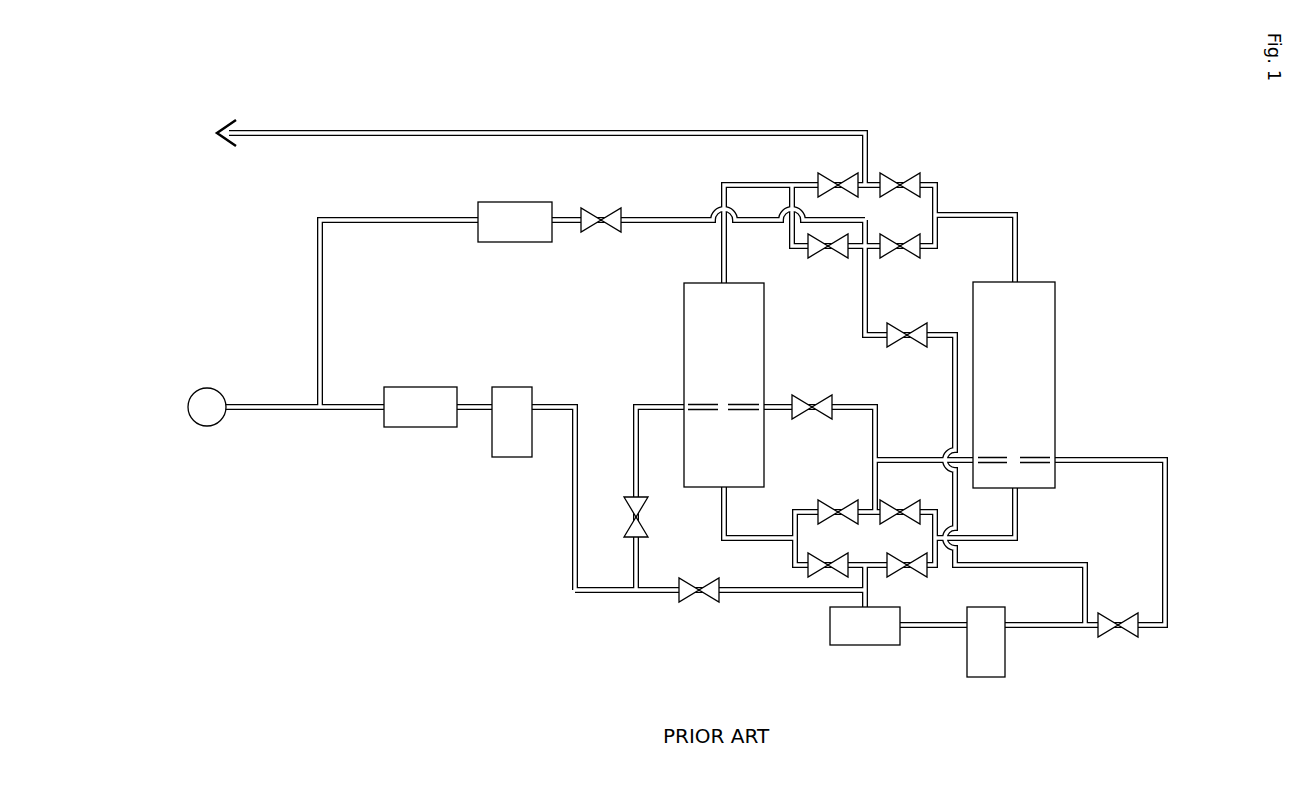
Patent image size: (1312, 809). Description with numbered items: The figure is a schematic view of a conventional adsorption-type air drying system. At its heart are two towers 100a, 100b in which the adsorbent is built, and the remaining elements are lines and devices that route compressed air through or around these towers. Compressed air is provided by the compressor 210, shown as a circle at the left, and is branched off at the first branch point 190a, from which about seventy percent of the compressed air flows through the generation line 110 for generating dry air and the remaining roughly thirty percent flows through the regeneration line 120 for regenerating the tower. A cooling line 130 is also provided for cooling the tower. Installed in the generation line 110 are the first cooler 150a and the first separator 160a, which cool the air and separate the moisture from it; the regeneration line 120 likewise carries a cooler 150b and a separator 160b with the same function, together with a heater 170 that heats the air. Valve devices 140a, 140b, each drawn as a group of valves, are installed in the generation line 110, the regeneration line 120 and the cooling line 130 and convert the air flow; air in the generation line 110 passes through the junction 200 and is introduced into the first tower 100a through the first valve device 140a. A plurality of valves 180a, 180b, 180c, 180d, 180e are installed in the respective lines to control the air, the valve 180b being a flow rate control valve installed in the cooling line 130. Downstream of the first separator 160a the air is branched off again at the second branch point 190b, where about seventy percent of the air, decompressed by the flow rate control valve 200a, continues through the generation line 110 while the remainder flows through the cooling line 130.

The tower 100a is at (684, 307).
The tower 100b is at (1055, 322).
The generation line 110 is at (573, 552).
The regeneration line 120 is at (378, 224).
The cooling line 130 is at (632, 440).
The first valve device 140a is at (790, 579).
The valve device 140b is at (928, 168).
The first cooler 150a is at (421, 428).
The cooler 150b is at (1005, 660).
The first separator 160a is at (510, 458).
The separator 160b is at (888, 648).
The heater 170 is at (510, 243).
The valve 180a is at (585, 213).
The flow rate control valve 180b is at (643, 508).
The valve 180c is at (798, 395).
The valve 180d is at (915, 330).
The valve 180e is at (1135, 628).
The first branch point 190a is at (318, 412).
The second branch point 190b is at (620, 596).
The junction 200 is at (862, 598).
The flow rate control valve 200a is at (699, 600).
The compressor 210 is at (198, 388).